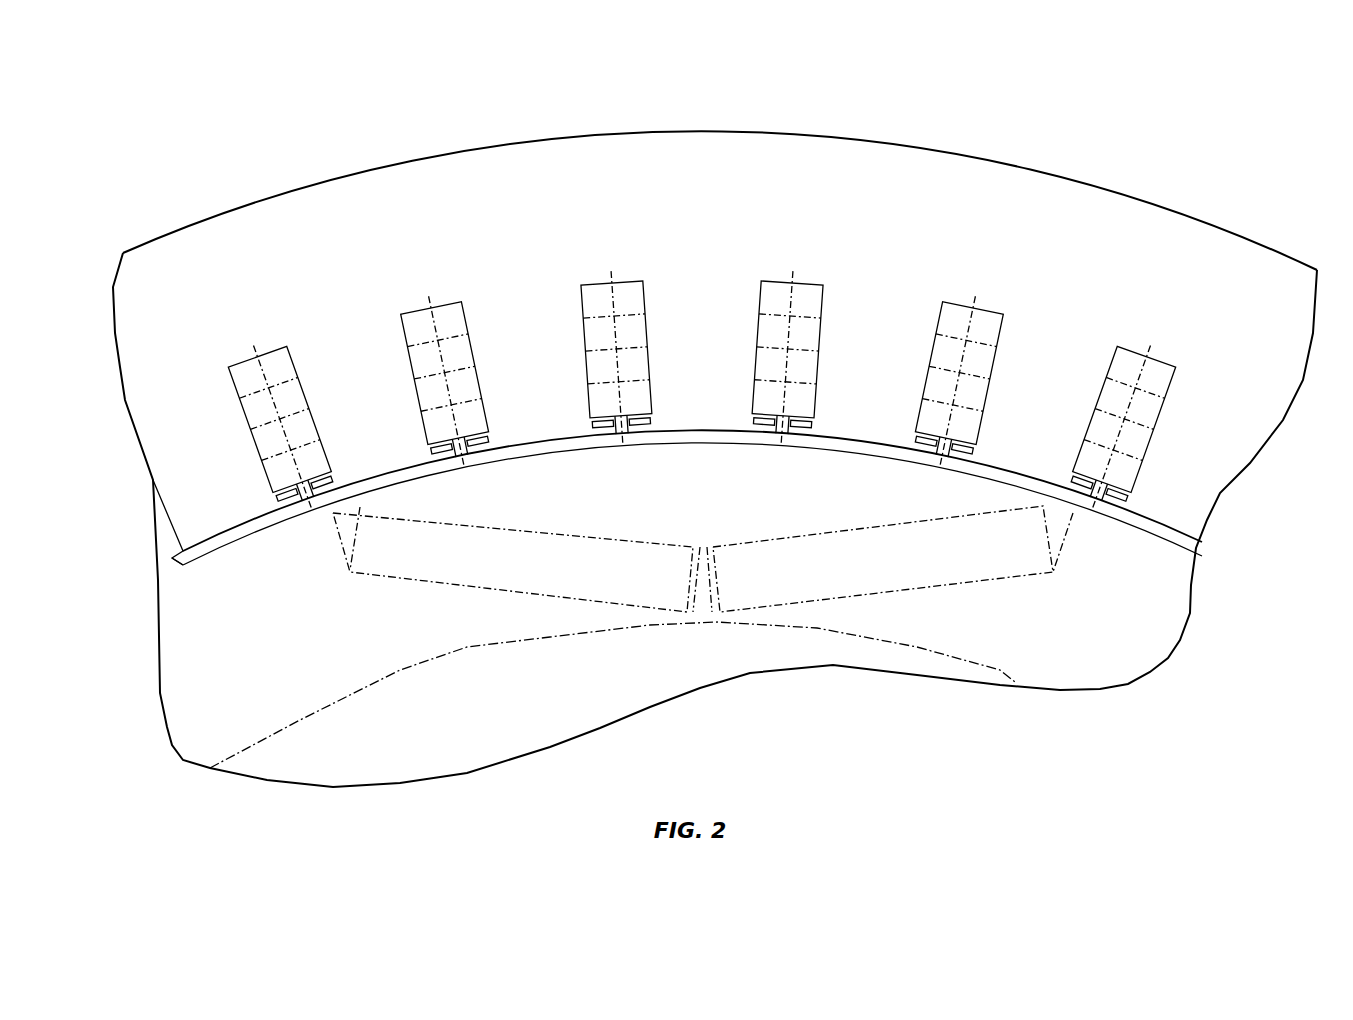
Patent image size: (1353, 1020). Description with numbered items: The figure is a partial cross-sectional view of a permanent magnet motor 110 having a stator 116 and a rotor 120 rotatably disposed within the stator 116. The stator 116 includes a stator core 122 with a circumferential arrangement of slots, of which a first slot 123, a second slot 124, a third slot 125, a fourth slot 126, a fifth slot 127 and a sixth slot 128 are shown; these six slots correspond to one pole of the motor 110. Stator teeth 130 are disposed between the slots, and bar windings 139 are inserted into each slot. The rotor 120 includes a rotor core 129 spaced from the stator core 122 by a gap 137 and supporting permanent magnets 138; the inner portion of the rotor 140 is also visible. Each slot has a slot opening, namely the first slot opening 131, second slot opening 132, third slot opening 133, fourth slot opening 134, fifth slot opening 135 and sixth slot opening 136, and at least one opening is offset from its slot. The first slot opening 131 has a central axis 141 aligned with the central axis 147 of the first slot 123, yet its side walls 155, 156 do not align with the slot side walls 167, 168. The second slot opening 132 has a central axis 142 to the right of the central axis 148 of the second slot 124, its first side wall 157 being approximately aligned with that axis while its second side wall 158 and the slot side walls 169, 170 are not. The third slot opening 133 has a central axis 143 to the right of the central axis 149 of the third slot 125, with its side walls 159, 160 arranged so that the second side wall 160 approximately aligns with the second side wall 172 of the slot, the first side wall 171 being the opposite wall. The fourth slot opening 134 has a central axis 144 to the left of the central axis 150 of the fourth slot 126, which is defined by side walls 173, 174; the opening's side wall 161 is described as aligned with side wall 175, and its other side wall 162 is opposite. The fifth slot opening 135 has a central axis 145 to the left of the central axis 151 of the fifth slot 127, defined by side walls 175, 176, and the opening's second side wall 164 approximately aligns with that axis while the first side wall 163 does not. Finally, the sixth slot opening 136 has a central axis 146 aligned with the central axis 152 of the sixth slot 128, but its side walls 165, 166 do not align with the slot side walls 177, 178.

The motor 110 is at (715, 432).
The stator 116 is at (330, 196).
The rotor 120 is at (667, 489).
The stator core 122 is at (658, 188).
The first slot 123 is at (243, 364).
The second slot 124 is at (420, 312).
The third slot 125 is at (597, 280).
The fourth slot 126 is at (778, 280).
The fifth slot 127 is at (958, 304).
The sixth slot 128 is at (1134, 349).
The rotor core 129 is at (263, 676).
The stator teeth 130 is at (330, 393).
The first slot opening 131 is at (300, 505).
The second slot opening 132 is at (468, 448).
The third slot opening 133 is at (637, 435).
The fourth slot opening 134 is at (757, 435).
The fifth slot opening 135 is at (932, 436).
The sixth slot opening 136 is at (1100, 507).
The gap 137 is at (185, 545).
The permanent magnets 138 is at (488, 570).
The bar windings 139 is at (245, 390).
The inner core portion 140 is at (377, 745).
The central axis of first slot opening 141 is at (315, 495).
The central axis of second slot opening 142 is at (490, 465).
The central axis of third slot opening 143 is at (640, 432).
The central axis of fourth slot opening 144 is at (760, 436).
The central axis of fifth slot opening 145 is at (942, 448).
The central axis of sixth slot opening 146 is at (1097, 495).
The central axis of first slot 147 is at (268, 363).
The central axis of second slot 148 is at (440, 314).
The central axis of third slot 149 is at (614, 292).
The central axis of fourth slot 150 is at (793, 296).
The central axis of fifth slot 151 is at (975, 320).
The central axis of sixth slot 152 is at (1160, 364).
The first side wall of first slot opening 155 is at (292, 497).
The second side wall of first slot opening 156 is at (353, 485).
The first side wall of second slot opening 157 is at (460, 452).
The second side wall of second slot opening 158 is at (495, 455).
The first side wall of third slot opening 159 is at (625, 427).
The second side wall of third slot opening 160 is at (653, 413).
The first side wall of fourth slot opening 161 is at (747, 428).
The second side wall of fourth slot opening 162 is at (773, 435).
The first side wall of fifth slot opening 163 is at (918, 444).
The second side wall of fifth slot opening 164 is at (960, 448).
The first side wall of sixth slot opening 165 is at (1082, 488).
The second side wall of sixth slot opening 166 is at (1120, 499).
The first side wall of first slot 167 is at (256, 447).
The second side wall of first slot 168 is at (326, 462).
The first side wall of second slot 169 is at (411, 364).
The second side wall of second slot 170 is at (481, 389).
The first side wall of third slot 171 is at (580, 316).
The second side wall of third slot 172 is at (652, 365).
The first side wall of fourth slot 173 is at (762, 301).
The second side wall of fourth slot 174 is at (818, 412).
The first side wall of fifth slot 175 is at (937, 326).
The second side wall of fifth slot 176 is at (982, 422).
The first side wall of sixth slot 177 is at (1118, 358).
The second side wall of sixth slot 178 is at (1140, 468).